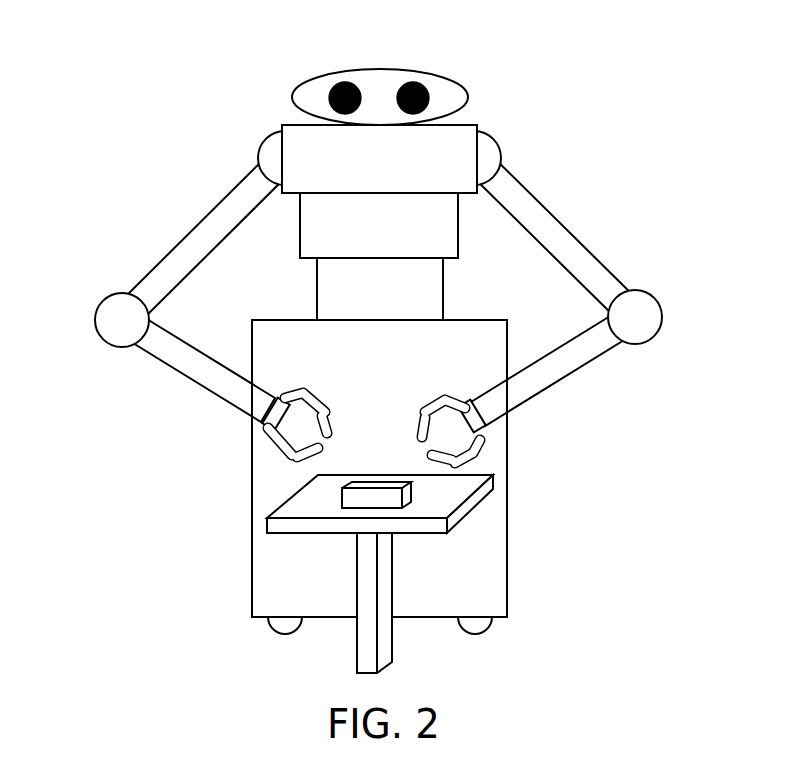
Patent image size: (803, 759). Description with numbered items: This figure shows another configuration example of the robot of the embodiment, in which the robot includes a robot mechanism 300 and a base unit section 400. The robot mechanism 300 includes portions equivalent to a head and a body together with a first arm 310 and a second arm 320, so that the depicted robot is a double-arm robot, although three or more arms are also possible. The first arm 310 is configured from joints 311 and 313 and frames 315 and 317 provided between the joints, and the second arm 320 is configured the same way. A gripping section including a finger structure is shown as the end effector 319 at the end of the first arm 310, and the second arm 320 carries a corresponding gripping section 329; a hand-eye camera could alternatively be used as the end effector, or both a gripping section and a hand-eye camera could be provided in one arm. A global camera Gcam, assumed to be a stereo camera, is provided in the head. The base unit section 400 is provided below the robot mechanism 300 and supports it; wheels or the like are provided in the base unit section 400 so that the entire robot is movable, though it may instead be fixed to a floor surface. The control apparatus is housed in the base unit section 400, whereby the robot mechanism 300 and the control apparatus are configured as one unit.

The robot mechanism 300 is at (673, 328).
The first arm 310 is at (105, 200).
The joint 311 is at (263, 135).
The joint 313 is at (100, 304).
The frame 315 is at (185, 233).
The frame 317 is at (172, 373).
The end effector 319 is at (313, 392).
The second arm 320 is at (577, 178).
The hand of second arm 329 is at (435, 398).
The base unit section 400 is at (507, 525).
The global camera Gcam is at (358, 82).